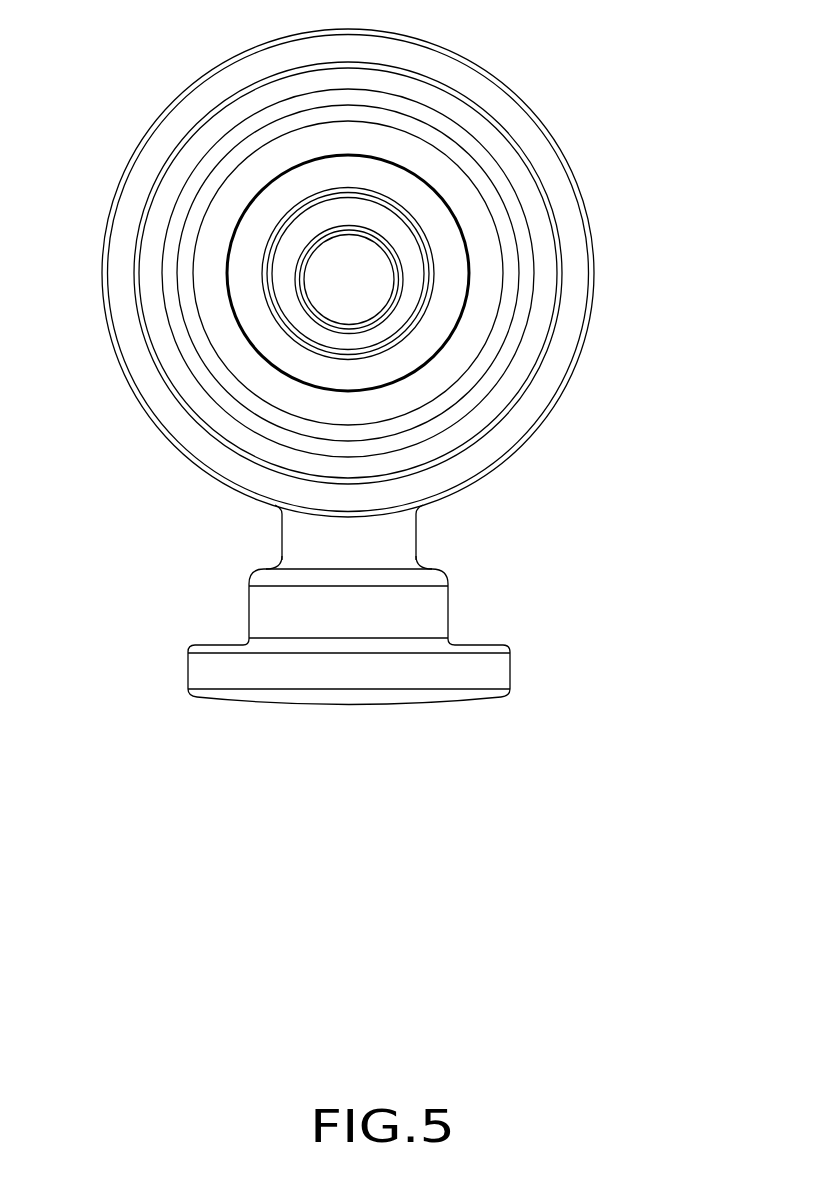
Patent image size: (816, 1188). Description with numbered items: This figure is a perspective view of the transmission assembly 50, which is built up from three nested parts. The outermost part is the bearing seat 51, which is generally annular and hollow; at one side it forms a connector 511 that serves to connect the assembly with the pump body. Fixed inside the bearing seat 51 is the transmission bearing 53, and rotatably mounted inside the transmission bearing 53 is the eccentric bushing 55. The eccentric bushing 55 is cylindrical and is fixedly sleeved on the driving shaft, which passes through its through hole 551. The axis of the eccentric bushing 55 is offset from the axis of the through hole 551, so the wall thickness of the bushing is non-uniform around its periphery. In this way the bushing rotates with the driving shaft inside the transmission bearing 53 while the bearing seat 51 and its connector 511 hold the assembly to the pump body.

The transmission assembly 50 is at (358, 367).
The bearing seat 51 is at (562, 360).
The connector 511 is at (430, 617).
The transmission bearing 53 is at (222, 212).
The eccentric bushing 55 is at (288, 303).
The through hole 551 is at (352, 275).